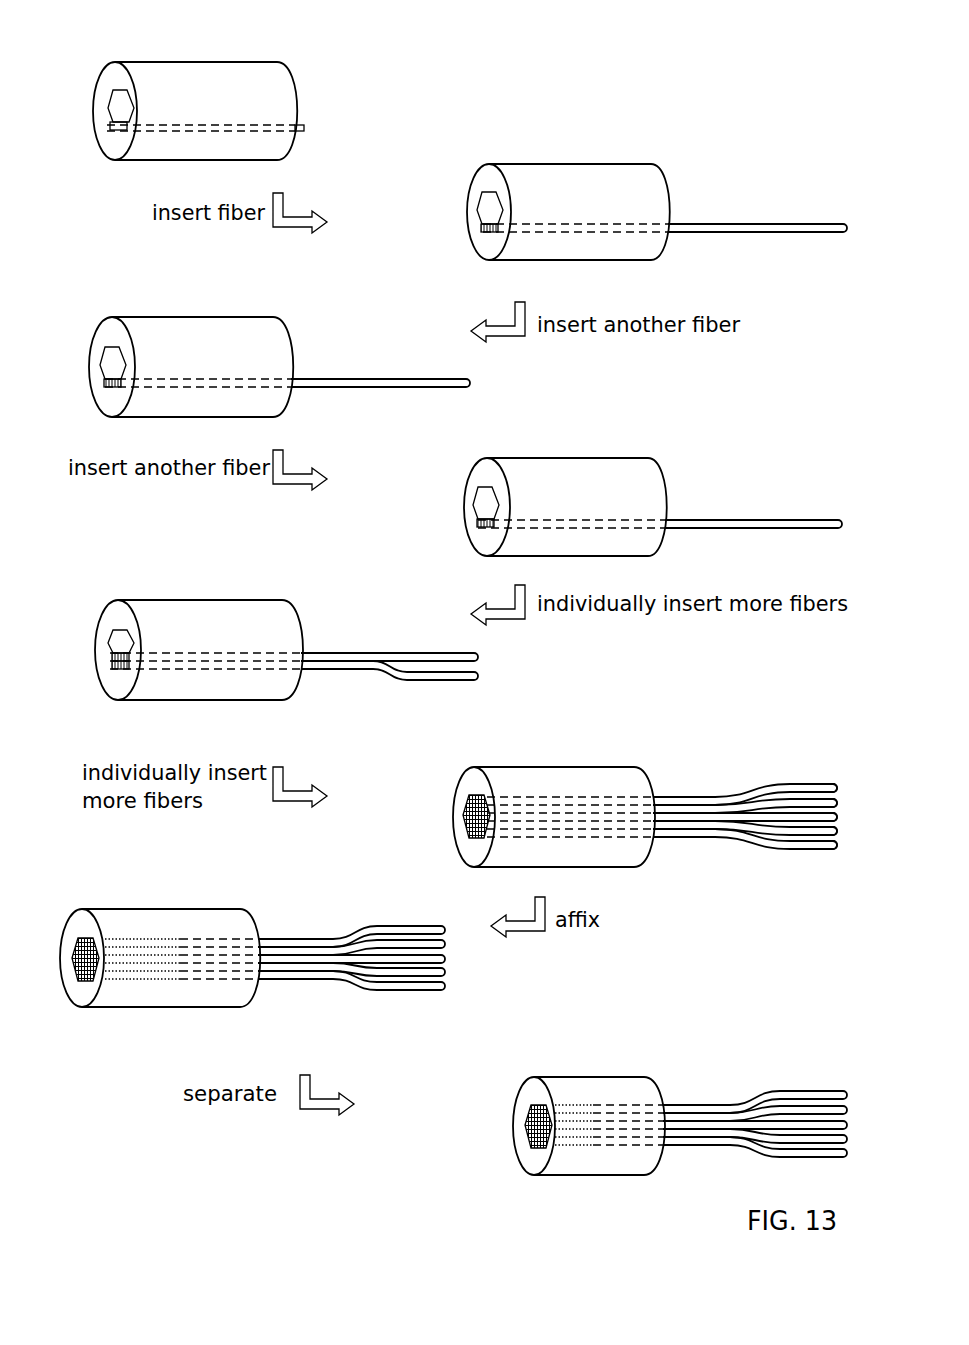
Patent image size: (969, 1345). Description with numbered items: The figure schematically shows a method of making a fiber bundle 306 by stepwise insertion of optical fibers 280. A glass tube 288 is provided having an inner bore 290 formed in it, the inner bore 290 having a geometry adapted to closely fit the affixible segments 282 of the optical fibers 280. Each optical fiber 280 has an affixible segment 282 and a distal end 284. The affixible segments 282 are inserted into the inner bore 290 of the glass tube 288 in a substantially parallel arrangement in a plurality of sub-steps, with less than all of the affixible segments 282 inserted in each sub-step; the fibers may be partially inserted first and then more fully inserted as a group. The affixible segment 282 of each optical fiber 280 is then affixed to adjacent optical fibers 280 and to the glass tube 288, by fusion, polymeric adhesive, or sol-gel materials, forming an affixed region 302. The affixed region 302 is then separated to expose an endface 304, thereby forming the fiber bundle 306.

The glass tube 288 is at (207, 75).
The inner bore 290 is at (112, 106).
The optical fiber 280 is at (748, 229).
The affixible segment 282 is at (572, 763).
The distal end 284 is at (835, 790).
The affixed region 302 is at (178, 902).
The endface 304 is at (492, 1102).
The fiber bundle 306 is at (644, 1089).